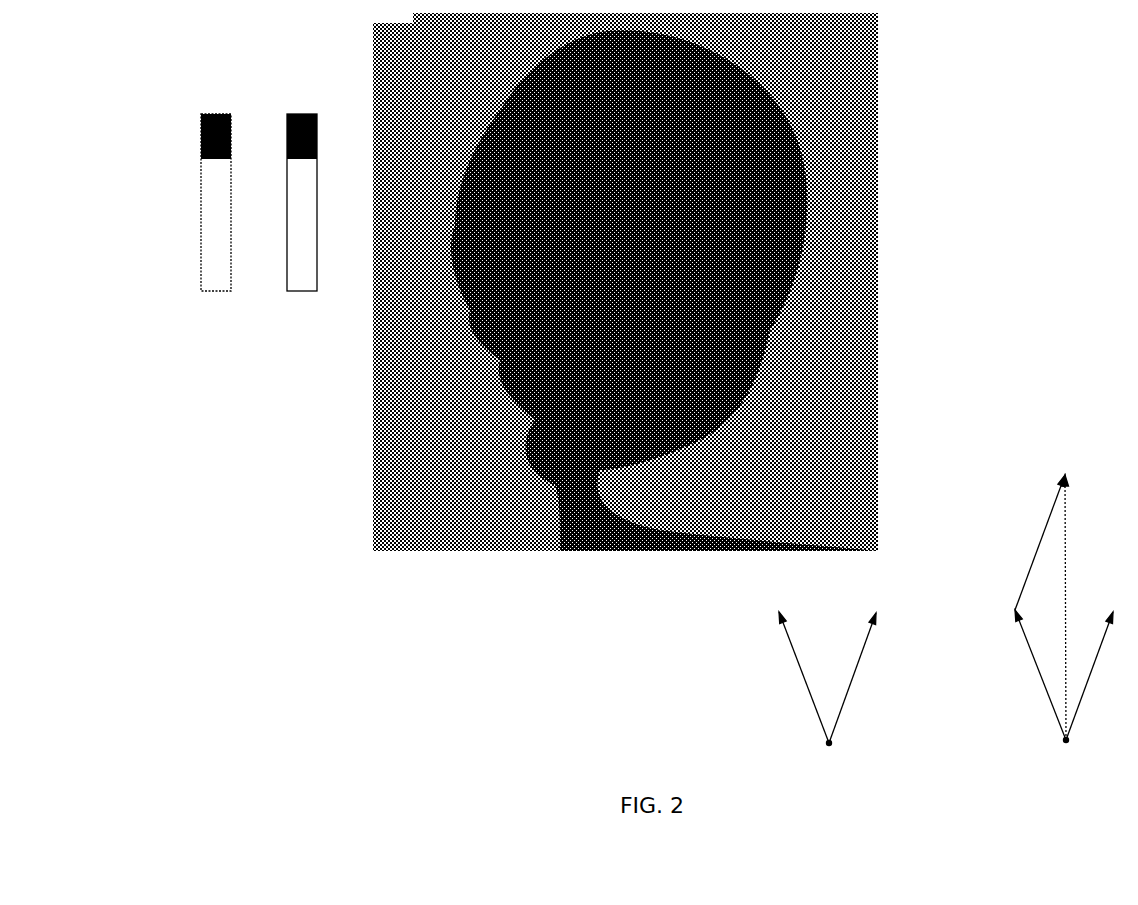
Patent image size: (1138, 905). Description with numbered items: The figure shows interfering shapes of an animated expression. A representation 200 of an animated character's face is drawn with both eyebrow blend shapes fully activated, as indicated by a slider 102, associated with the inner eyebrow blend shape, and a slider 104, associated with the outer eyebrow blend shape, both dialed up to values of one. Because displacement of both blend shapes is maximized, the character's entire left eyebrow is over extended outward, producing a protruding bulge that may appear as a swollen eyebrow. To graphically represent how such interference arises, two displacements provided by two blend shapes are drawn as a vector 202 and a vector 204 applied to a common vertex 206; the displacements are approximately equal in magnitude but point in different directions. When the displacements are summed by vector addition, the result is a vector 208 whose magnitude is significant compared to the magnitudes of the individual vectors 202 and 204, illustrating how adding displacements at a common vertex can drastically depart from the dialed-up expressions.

The representation of the character's face 200 is at (878, 68).
The slider 102 is at (199, 332).
The slider 104 is at (286, 332).
The vector 202 is at (797, 662).
The vector 204 is at (857, 665).
The vertex 206 is at (826, 746).
The vector 208 is at (1066, 525).